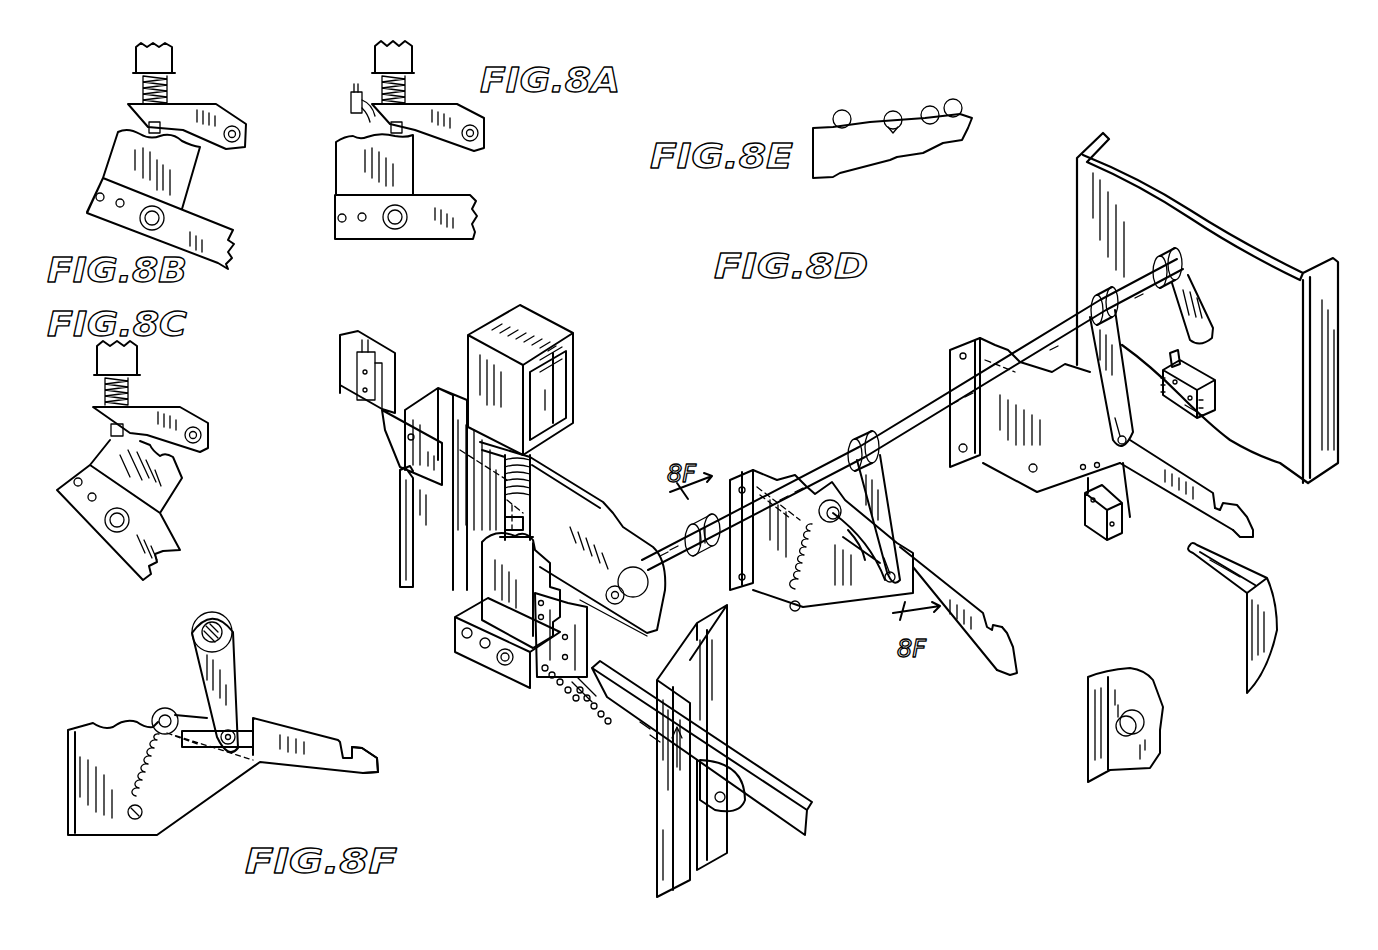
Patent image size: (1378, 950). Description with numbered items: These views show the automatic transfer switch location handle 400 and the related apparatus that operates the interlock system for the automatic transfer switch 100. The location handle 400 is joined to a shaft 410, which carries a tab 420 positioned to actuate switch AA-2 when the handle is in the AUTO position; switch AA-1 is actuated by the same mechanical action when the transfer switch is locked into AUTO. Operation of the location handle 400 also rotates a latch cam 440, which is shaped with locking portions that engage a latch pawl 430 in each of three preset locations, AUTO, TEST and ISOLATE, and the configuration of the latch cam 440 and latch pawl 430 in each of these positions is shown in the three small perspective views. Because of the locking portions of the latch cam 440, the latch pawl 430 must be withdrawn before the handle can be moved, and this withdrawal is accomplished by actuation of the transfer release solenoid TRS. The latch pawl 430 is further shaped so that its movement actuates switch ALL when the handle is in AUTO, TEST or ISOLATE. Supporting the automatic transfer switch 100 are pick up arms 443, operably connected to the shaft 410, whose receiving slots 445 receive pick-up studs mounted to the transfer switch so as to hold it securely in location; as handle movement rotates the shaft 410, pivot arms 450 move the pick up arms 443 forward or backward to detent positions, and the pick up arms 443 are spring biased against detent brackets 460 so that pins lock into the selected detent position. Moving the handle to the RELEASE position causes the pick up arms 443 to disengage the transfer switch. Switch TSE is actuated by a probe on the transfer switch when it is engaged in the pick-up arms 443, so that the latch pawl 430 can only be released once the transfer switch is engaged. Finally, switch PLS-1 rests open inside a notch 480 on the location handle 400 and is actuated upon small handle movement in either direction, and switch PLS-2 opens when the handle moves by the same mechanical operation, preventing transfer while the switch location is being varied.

In FIG. 8B, the transfer release solenoid TRS is at (175, 50).
In FIG. 8A, the transfer release solenoid TRS is at (416, 50).
In FIG. 8C, the transfer release solenoid TRS is at (140, 356).
In FIG. 8D, the transfer release solenoid TRS is at (465, 353).
In FIG. 8B, the latch pawl 430 is at (203, 84).
In FIG. 8A, the latch pawl 430 is at (483, 113).
In FIG. 8C, the latch pawl 430 is at (161, 406).
In FIG. 8D, the latch pawl 430 is at (578, 504).
In FIG. 8B, the latch cam 440 is at (190, 177).
In FIG. 8A, the latch cam 440 is at (414, 166).
In FIG. 8C, the latch cam 440 is at (159, 507).
In FIG. 8D, the latch cam 440 is at (487, 567).
In FIG. 8A, the switch ALL is at (342, 108).
In FIG. 8D, the switch ALL is at (362, 402).
In FIG. 8E, the detent brackets 460 is at (812, 131).
In FIG. 8D, the detent brackets 460 is at (814, 612).
In FIG. 8E, the AUTO position AUTO is at (840, 102).
In FIG. 8E, the TEST position TEST is at (892, 102).
In FIG. 8E, the ISOLATE position ISOLATE is at (928, 58).
In FIG. 8E, the RELEASE position RELEASE is at (955, 85).
In FIG. 8F, the pivot arms 450 is at (240, 660).
In FIG. 8D, the pivot arms 450 is at (886, 486).
In FIG. 8F, the receiving slots 445 is at (355, 715).
In FIG. 8D, the receiving slots 445 is at (992, 633).
In FIG. 8F, the pick up arms 443 is at (377, 772).
In FIG. 8D, the pick up arms 443 is at (1007, 675).
In FIG. 8D, the shaft 410 is at (670, 514).
In FIG. 8D, the tab 420 is at (1202, 297).
In FIG. 8D, the automatic transfer switch location handle 400 is at (798, 801).
In FIG. 8D, the notch 480 is at (607, 677).
In FIG. 8D, the automatic transfer switch 100 is at (1240, 637).
In FIG. 8D, the switch PLS-1 is at (553, 664).
In FIG. 8D, the switch PLS-2 is at (578, 717).
In FIG. 8D, the switch TSE is at (1088, 537).
In FIG. 8D, the switch AA-1 is at (1222, 389).
In FIG. 8D, the switch AA-2 is at (1220, 419).